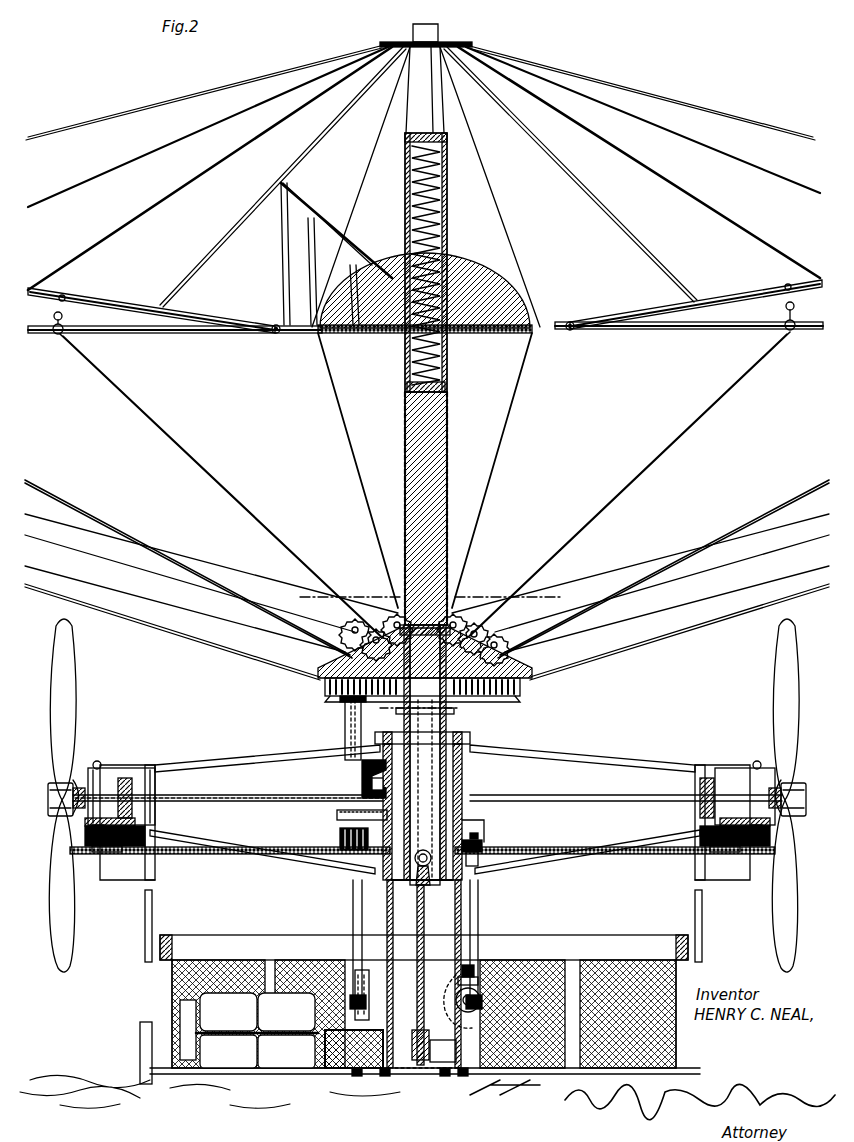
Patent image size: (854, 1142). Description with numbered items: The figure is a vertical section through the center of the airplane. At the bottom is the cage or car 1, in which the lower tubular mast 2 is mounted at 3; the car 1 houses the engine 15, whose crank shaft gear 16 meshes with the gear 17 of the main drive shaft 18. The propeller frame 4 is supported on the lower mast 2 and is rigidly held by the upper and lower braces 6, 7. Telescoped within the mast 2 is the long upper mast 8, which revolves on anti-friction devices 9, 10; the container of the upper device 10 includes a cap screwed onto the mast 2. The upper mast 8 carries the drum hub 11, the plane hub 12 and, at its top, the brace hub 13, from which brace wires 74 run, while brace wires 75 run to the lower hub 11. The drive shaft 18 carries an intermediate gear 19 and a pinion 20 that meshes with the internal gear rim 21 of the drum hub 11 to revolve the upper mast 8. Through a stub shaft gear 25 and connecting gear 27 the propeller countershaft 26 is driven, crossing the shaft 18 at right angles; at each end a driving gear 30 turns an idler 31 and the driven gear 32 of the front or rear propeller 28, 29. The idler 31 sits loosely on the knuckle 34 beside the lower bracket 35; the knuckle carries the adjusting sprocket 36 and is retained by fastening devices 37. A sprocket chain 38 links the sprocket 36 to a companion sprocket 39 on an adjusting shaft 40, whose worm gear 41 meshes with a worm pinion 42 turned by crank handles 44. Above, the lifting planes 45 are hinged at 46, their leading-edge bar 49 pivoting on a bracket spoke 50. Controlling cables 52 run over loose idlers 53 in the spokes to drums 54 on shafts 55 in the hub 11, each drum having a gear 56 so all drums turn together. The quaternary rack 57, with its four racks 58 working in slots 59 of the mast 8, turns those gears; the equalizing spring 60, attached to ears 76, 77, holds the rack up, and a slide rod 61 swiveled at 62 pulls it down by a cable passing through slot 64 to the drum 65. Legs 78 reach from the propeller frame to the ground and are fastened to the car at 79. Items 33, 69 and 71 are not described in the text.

The cage or car 1 is at (352, 1075).
The lower tubular mast 2 is at (476, 916).
The mounting of lower mast 3 is at (428, 847).
The propeller frame 4 is at (158, 768).
The upper brace 6 is at (282, 775).
The lower brace 7 is at (270, 866).
The upper mast 8 is at (405, 362).
The anti-friction device 9 is at (465, 838).
The anti-friction device 10 is at (378, 738).
The drum hub 11 is at (512, 668).
The plane hub 12 is at (468, 280).
The brace hub 13 is at (410, 44).
The engine 15 is at (238, 1020).
The gear 16 is at (345, 1065).
The gear 17 is at (340, 1005).
The main drive shaft 18 is at (355, 922).
The intermediate gear 19 is at (340, 838).
The pinion 20 is at (346, 704).
The internal gear rim 21 is at (519, 688).
The gear 25 is at (337, 815).
The propeller countershaft 26 is at (232, 797).
The connecting gear 27 is at (362, 782).
The front propeller 28 is at (70, 668).
The rear propeller 29 is at (776, 666).
The driving gear 30 is at (124, 778).
The idler 31 is at (66, 828).
The driven gear 32 is at (50, 790).
The feet 33 is at (410, 1087).
The knuckle 34 is at (70, 782).
The lower bracket 35 is at (128, 768).
The adjusting sprocket 36 is at (94, 855).
The fastening devices 37 is at (97, 760).
The sprocket chain 38 is at (185, 855).
The companion sprocket 39 is at (480, 845).
The adjusting shaft 40 is at (353, 900).
The worm gear 41 is at (482, 1000).
The worm pinion 42 is at (505, 962).
The crank handles 44 is at (480, 1006).
The lifting planes 45 is at (290, 186).
The hinge mounting 46 is at (276, 334).
The bar 49 is at (200, 308).
The bracket spoke 50 is at (127, 333).
The controlling cables 52 is at (740, 540).
The loose idlers 53 is at (58, 336).
The drums 54 is at (462, 616).
The shafts 55 is at (345, 648).
The gear 56 is at (358, 640).
The quaternary rack 57 is at (405, 466).
The racks 58 is at (405, 432).
The slots 59 is at (446, 392).
The equalizing spring 60 is at (442, 210).
The slide rod 61 is at (470, 1040).
The swivel connection 62 is at (402, 592).
The slot 64 is at (455, 1030).
The drum 65 is at (495, 1062).
The eye bolt 69 is at (414, 867).
The tube 71 is at (438, 835).
The brace wires 74 is at (232, 160).
The brace wires 75 is at (248, 645).
The ear 76 is at (410, 150).
The ear 77 is at (405, 400).
The legs 78 is at (145, 952).
The leg fastening arrangement 79 is at (140, 1060).